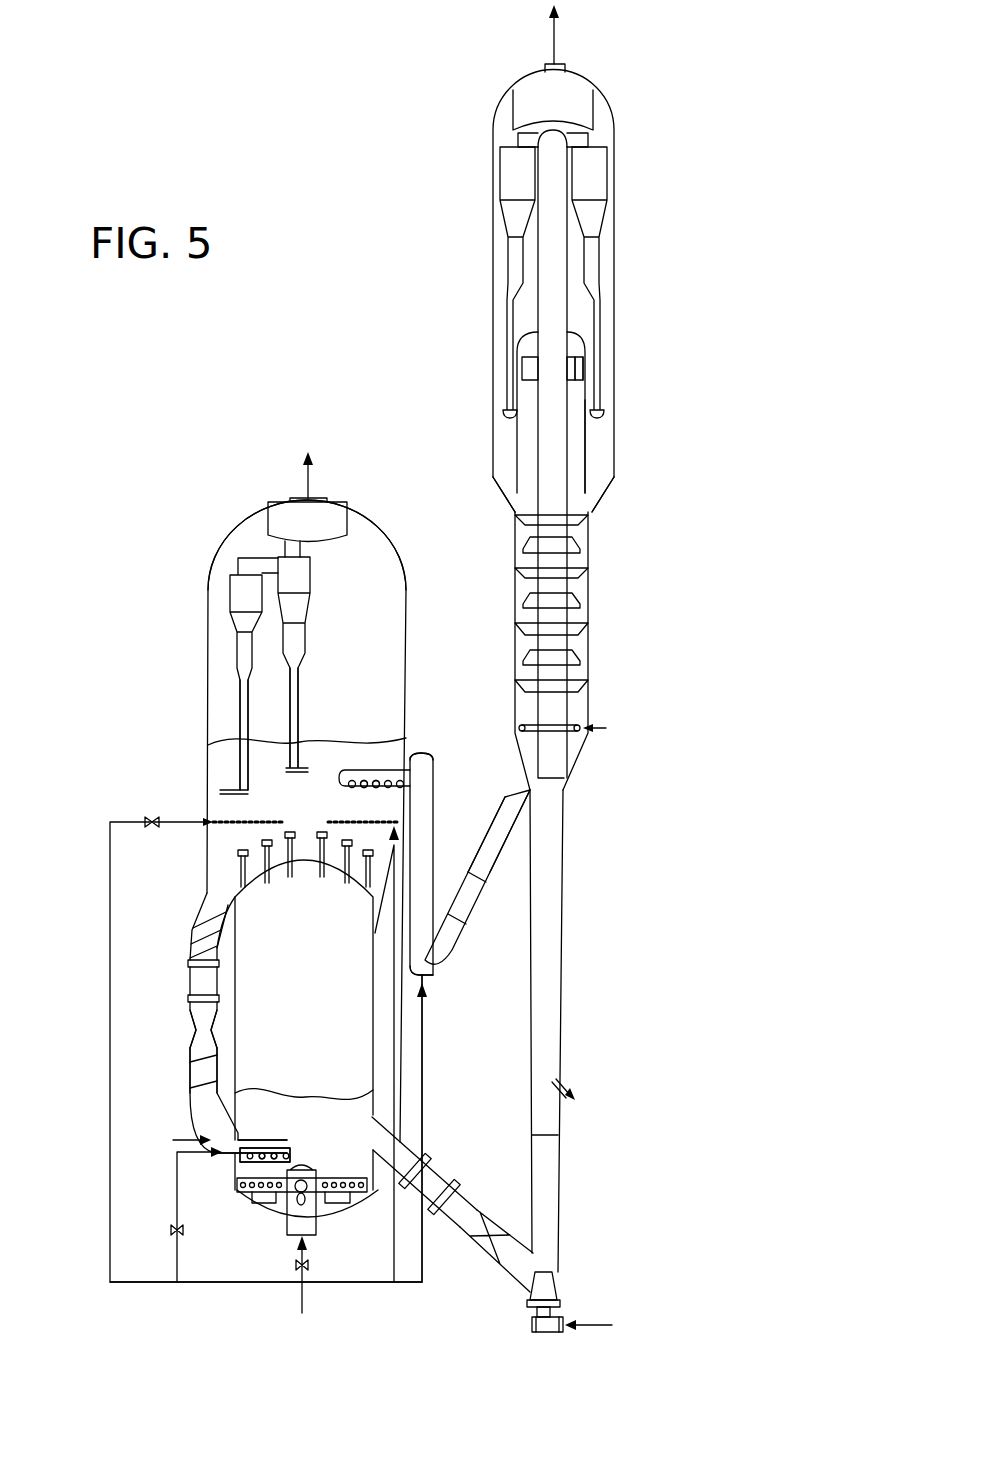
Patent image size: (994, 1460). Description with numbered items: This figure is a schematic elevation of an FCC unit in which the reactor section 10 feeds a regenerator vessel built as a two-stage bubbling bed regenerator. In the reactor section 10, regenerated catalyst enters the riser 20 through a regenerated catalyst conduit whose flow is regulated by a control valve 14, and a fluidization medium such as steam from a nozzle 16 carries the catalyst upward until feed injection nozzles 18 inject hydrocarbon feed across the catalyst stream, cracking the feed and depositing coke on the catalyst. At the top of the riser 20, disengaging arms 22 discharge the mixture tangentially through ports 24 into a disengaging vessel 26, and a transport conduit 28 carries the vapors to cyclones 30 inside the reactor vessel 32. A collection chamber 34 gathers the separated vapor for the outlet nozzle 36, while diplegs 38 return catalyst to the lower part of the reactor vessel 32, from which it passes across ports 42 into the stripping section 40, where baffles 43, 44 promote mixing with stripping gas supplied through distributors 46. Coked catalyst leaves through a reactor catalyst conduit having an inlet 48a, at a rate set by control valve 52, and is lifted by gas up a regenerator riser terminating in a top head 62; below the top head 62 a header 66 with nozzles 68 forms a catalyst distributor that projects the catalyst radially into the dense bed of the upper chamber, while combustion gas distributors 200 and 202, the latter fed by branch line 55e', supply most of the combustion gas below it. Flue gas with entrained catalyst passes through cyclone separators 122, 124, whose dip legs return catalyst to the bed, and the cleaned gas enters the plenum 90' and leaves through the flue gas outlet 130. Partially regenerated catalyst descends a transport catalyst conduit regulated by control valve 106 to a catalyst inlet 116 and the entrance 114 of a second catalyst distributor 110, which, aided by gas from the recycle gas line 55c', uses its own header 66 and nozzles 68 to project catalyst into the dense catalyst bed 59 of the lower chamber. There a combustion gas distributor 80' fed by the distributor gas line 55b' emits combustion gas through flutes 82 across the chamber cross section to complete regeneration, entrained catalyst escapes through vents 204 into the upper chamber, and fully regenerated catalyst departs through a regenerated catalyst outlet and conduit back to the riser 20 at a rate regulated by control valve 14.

The reactor section 10 is at (706, 528).
The control valve 14 is at (482, 1237).
The nozzle 16 is at (542, 1334).
The feed injection nozzles 18 is at (567, 1090).
The riser 20 is at (550, 985).
The disengaging arms 22 is at (580, 343).
The ports 24 is at (577, 375).
The disengaging vessel 26 is at (578, 438).
The transport conduit 28 is at (553, 222).
The cyclones 30 is at (515, 163).
The reactor vessel 32 is at (607, 296).
The collection chamber 34 is at (572, 90).
The outlet nozzle 36 is at (545, 68).
The diplegs 38 is at (597, 370).
The stripping section 40 is at (578, 594).
The ports 42 is at (513, 506).
The baffles 43 is at (573, 627).
The baffles 44 is at (563, 600).
The distributors 46 is at (578, 724).
The inlet 48a is at (506, 796).
The control valve 52 is at (470, 890).
The distributor gas line 55b' is at (329, 1268).
The recycle gas line 55c' is at (206, 1214).
The combustion gas line branch 55e' is at (441, 1128).
The dense catalyst bed 59 is at (165, 841).
The top head 62 is at (430, 756).
The header 66 is at (383, 770).
The nozzles 68 is at (368, 790).
The combustion gas distributor 80' is at (321, 1209).
The flutes 82 is at (253, 1203).
The plenum 90' is at (285, 507).
The control valve 106 is at (200, 1030).
The catalyst distributor 110 is at (171, 1140).
The entrance 114 is at (240, 1156).
The catalyst inlet 116 is at (232, 1130).
The cyclone separator 122 is at (240, 585).
The cyclone separator 124 is at (307, 578).
The flue gas outlet 130 is at (325, 502).
The combustion gas distributor 200 is at (232, 820).
The combustion gas distributor 202 is at (393, 818).
The vents 204 is at (240, 864).